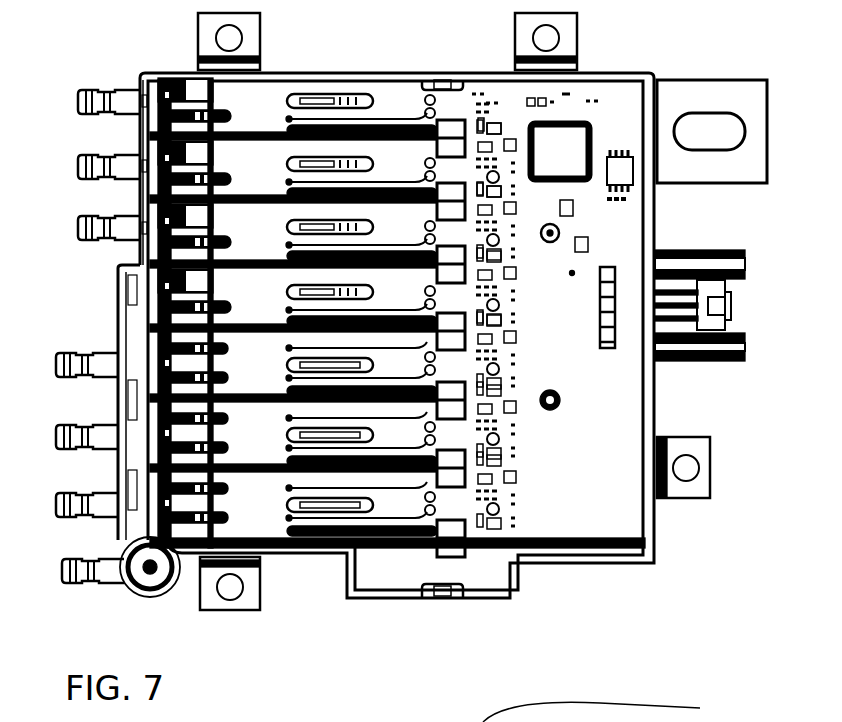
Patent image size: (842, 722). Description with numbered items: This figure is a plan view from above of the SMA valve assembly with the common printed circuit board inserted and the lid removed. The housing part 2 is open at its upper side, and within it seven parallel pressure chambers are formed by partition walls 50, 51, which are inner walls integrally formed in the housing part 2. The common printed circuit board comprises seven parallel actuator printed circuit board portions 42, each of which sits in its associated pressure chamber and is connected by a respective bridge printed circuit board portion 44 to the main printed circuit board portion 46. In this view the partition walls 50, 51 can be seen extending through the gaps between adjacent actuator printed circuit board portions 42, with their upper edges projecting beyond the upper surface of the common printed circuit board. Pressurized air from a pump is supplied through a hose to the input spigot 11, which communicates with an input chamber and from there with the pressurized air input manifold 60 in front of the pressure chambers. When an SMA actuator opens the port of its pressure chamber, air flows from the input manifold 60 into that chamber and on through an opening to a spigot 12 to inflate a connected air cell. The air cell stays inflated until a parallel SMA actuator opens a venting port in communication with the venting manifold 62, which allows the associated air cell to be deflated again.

The housing part 2 is at (622, 72).
The input spigot 11 is at (65, 565).
The spigot 12 is at (65, 500).
The actuator printed circuit board portion 42 is at (273, 95).
The bridge printed circuit board portion 44 is at (444, 95).
The main printed circuit board portion 46 is at (600, 485).
The partition wall 50 is at (252, 470).
The partition wall 51 is at (468, 555).
The input manifold 60 is at (145, 130).
The venting manifold 62 is at (128, 392).